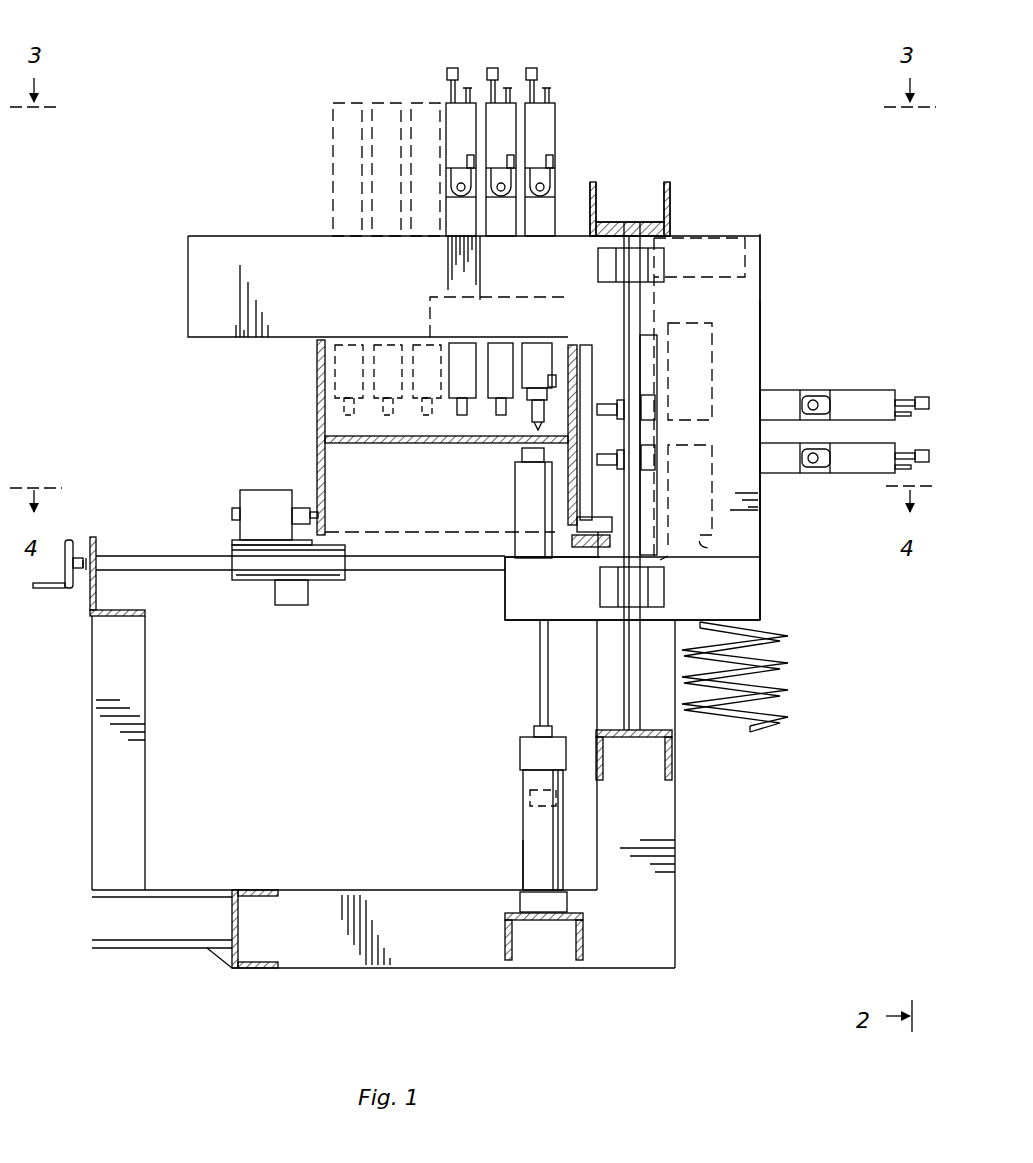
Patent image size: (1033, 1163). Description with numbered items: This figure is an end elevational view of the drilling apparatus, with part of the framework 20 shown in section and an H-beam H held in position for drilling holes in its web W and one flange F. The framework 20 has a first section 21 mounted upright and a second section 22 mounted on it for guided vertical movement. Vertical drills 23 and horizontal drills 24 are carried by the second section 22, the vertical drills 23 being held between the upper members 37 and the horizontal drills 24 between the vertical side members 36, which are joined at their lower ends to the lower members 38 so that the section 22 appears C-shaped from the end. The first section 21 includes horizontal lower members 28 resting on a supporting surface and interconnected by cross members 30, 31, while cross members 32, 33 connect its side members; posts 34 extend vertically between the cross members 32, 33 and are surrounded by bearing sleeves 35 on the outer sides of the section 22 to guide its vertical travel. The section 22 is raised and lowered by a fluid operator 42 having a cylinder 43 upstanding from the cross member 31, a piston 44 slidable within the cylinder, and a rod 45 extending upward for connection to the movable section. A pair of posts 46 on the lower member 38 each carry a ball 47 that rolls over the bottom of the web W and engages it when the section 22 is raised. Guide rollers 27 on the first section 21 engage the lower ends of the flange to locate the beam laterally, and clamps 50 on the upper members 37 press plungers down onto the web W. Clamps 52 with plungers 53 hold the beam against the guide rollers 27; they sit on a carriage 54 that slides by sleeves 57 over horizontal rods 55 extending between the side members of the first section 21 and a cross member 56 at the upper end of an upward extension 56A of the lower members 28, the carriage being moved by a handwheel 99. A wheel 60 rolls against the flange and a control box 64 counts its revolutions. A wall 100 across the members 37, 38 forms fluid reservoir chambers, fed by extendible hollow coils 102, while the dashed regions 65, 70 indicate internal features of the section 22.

The framework 20 is at (780, 258).
The first framework section 21 is at (680, 820).
The second framework section 22 is at (764, 526).
The vertical drills 23 is at (462, 345).
The horizontal drills 24 is at (648, 458).
The guide rollers 27 is at (598, 548).
The lower members 28 is at (392, 890).
The cross member 30 is at (240, 922).
The cross member 31 is at (505, 936).
The cross member 32 is at (674, 758).
The cross member 33 is at (664, 183).
The posts 34 is at (642, 364).
The bearing sleeves 35 is at (598, 262).
The side members 36 is at (762, 330).
The upper members 37 is at (228, 236).
The lower members 38 is at (505, 620).
The fluid operator 42 is at (520, 830).
The cylinder 43 is at (523, 860).
The piston 44 is at (530, 796).
The rod 45 is at (540, 674).
The posts 46 is at (515, 476).
The ball 47 is at (532, 428).
The clamps 50 is at (528, 358).
The clamps 52 is at (240, 490).
The plungers 53 is at (314, 518).
The carriage 54 is at (234, 546).
The horizontal rods 55 is at (118, 556).
The cross member 56 is at (93, 538).
The upward extension 56A is at (147, 790).
The sleeves 57 is at (238, 580).
The wheel 60 is at (325, 532).
The control box 64 is at (290, 605).
The slot 65 is at (430, 297).
The cavity 70 is at (692, 325).
The hand wheel 99 is at (70, 540).
The wall 100 is at (664, 560).
The hollow coils 102 is at (762, 718).
The flange F is at (580, 380).
The H-beam H is at (316, 372).
The web W is at (378, 443).